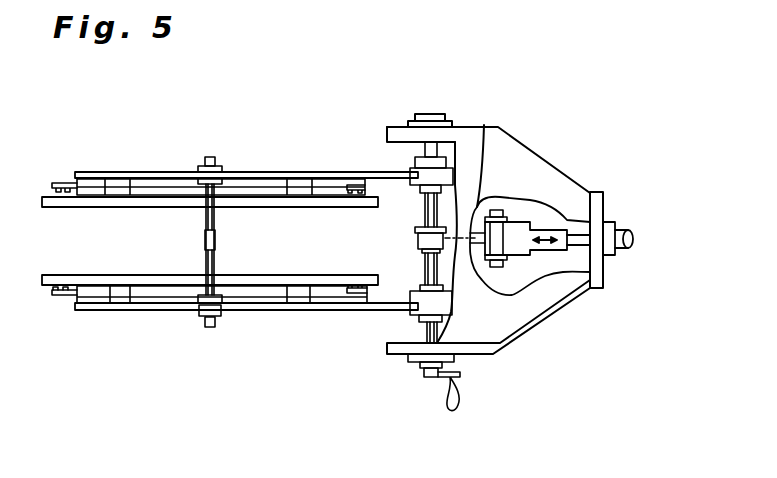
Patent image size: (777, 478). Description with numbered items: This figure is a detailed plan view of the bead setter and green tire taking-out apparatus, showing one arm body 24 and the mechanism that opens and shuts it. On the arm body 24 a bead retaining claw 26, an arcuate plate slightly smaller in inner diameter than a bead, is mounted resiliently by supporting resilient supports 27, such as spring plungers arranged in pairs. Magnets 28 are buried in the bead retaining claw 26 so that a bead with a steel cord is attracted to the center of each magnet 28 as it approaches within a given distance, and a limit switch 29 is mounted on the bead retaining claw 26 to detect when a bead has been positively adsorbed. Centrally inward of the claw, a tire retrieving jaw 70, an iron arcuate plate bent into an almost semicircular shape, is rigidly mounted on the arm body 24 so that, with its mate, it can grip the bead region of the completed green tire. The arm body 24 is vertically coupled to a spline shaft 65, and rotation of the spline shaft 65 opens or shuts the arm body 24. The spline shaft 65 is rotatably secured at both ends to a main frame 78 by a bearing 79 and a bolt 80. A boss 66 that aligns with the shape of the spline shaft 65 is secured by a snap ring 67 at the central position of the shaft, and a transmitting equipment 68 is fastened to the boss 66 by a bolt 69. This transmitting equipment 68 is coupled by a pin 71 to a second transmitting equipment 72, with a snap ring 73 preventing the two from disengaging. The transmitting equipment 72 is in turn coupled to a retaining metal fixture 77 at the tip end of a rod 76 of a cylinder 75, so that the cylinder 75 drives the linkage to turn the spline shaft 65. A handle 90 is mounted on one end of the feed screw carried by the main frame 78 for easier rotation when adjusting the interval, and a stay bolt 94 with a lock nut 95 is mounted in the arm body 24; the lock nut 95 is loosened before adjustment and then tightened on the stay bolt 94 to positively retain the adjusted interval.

The arm body 24 is at (330, 172).
The bead retaining claw 26 is at (153, 303).
The supporting resilient support 27 is at (313, 310).
The magnet 28 is at (65, 298).
The limit switch 29 is at (80, 288).
The tire retrieving jaw 70 is at (248, 207).
The stay bolt 94 is at (214, 157).
The lock nut 95 is at (199, 165).
The spline shaft 65 is at (424, 336).
The boss 66 is at (418, 238).
The snap ring 67 is at (420, 231).
The transmitting equipment 68 is at (452, 300).
The bolt 69 is at (421, 252).
The pin 71 is at (505, 213).
The transmitting equipment 72 is at (484, 125).
The snap ring 73 is at (495, 262).
The cylinder 75 is at (620, 222).
The rod 76 is at (585, 193).
The retaining metal fixture 77 is at (537, 199).
The main frame 78 is at (483, 354).
The bearing 79 is at (455, 358).
The bolt 80 is at (445, 376).
The handle 90 is at (448, 413).